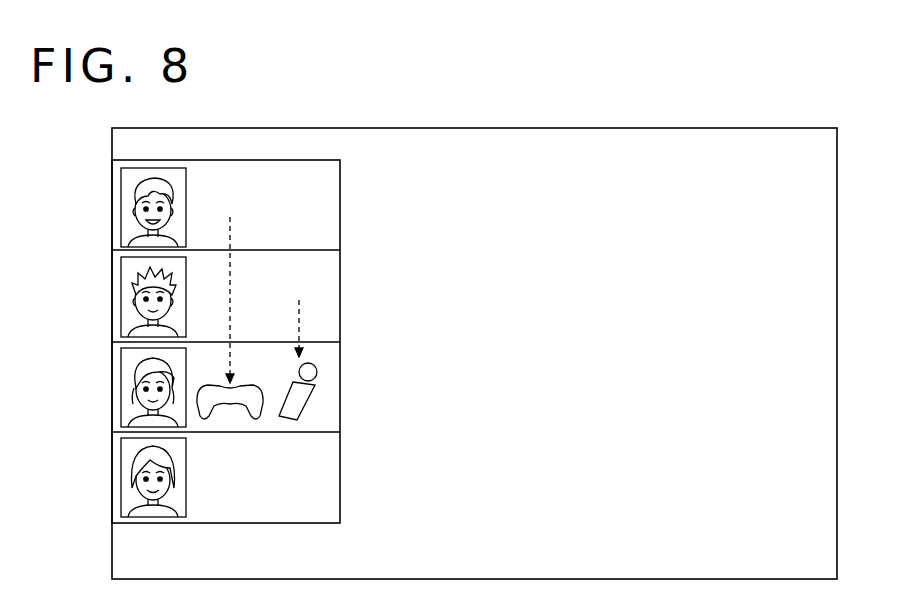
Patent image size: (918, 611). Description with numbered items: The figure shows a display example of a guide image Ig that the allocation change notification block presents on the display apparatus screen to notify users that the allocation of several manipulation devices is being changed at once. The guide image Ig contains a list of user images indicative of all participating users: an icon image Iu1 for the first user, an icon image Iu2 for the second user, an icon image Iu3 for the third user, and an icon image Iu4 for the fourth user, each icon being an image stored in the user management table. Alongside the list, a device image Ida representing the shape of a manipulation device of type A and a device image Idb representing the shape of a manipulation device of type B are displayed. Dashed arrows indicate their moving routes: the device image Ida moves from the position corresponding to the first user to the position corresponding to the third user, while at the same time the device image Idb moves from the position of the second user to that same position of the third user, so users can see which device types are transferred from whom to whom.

The guide image Ig is at (341, 311).
The icon image Iu1 is at (117, 215).
The icon image Iu2 is at (117, 300).
The icon image Iu3 is at (117, 393).
The icon image Iu4 is at (117, 483).
The device image Ida is at (262, 418).
The device image Idb is at (316, 398).